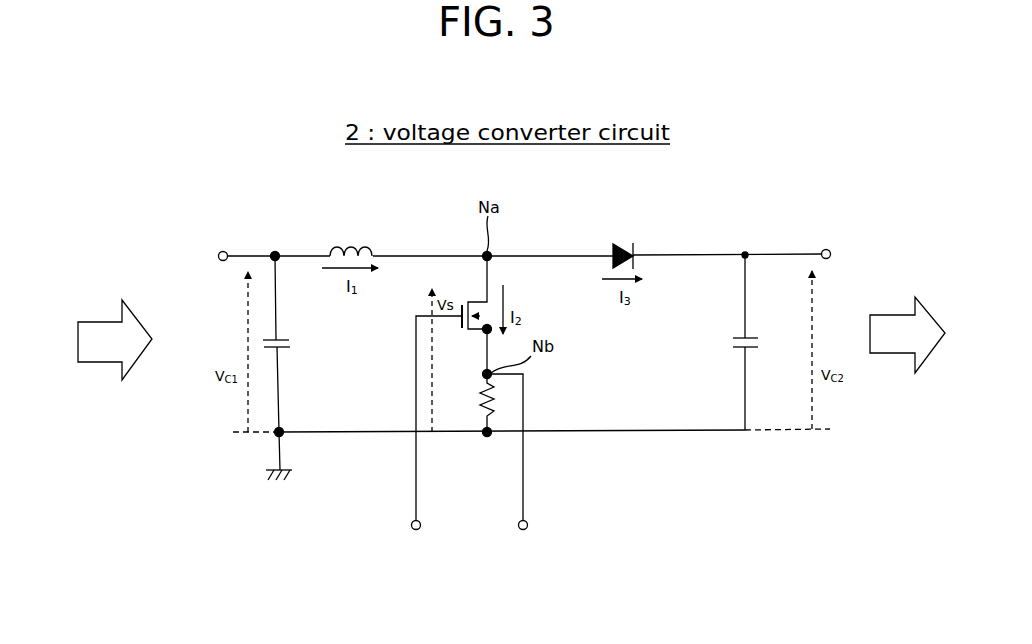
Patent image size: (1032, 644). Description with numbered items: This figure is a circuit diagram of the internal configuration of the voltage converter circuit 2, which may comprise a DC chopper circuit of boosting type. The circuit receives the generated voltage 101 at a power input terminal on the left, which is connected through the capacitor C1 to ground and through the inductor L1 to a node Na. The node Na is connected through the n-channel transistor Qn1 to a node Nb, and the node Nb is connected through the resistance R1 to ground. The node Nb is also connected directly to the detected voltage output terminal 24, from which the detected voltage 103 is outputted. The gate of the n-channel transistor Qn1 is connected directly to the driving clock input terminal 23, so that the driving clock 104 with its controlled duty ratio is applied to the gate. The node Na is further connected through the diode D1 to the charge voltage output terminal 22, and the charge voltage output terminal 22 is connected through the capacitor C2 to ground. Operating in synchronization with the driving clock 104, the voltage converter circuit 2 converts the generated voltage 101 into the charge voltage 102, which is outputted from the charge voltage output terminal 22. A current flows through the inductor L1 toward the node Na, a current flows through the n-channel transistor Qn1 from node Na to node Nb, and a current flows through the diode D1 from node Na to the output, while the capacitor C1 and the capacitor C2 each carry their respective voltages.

The voltage converter circuit 2 is at (224, 251).
The charge voltage output terminal 22 is at (826, 249).
The driving clock input terminal 23 is at (420, 525).
The detected voltage output terminal 24 is at (528, 523).
The generated voltage 101 is at (100, 322).
The charge voltage 102 is at (898, 315).
The detected voltage 103 is at (523, 478).
The driving clock 104 is at (416, 470).
The inductor L1 is at (351, 238).
The capacitor C1 is at (284, 344).
The capacitor C2 is at (754, 342).
The diode D1 is at (622, 244).
The n-channel transistor Qn1 is at (469, 304).
The resistance R1 is at (475, 403).